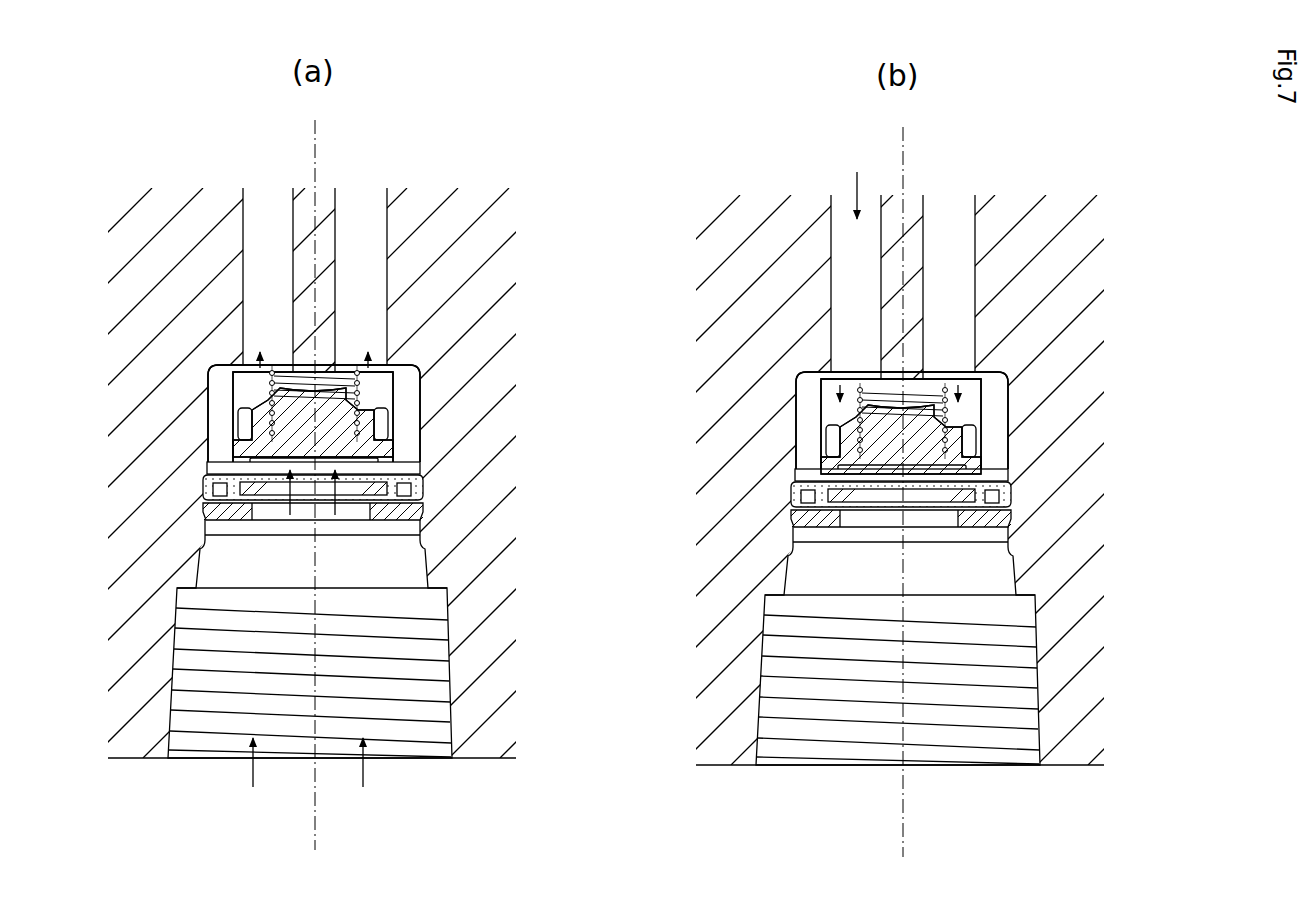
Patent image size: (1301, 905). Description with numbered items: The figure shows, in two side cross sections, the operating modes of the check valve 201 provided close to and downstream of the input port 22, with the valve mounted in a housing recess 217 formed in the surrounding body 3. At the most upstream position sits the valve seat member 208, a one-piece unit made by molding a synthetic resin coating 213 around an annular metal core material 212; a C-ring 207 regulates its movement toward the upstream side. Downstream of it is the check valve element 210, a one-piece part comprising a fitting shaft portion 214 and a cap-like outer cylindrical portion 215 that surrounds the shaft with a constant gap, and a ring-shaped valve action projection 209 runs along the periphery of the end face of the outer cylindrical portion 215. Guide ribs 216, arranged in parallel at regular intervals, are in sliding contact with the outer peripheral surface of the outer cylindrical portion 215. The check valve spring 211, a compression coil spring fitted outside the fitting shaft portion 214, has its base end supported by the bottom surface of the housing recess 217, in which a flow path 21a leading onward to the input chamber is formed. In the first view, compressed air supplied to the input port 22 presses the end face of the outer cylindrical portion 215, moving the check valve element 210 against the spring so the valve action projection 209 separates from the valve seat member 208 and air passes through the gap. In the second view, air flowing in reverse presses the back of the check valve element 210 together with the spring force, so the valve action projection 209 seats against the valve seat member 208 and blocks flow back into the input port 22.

The housing (holder) 3 is at (150, 758).
The flow path 21a is at (245, 275).
The input port 22 is at (212, 745).
The check valve 201 is at (587, 323).
The C-ring 207 is at (423, 515).
The valve seat member 208 is at (432, 490).
The valve action projection 209 is at (207, 478).
The check valve element 210 is at (407, 414).
The check valve spring 211 is at (343, 383).
The annular metal core material 212 is at (212, 490).
The synthetic resin coating 213 is at (220, 502).
The fitting shaft portion 214 is at (262, 403).
The outer cylindrical portion 215 is at (250, 430).
The guide ribs 216 is at (412, 443).
The housing recess 217 is at (203, 445).